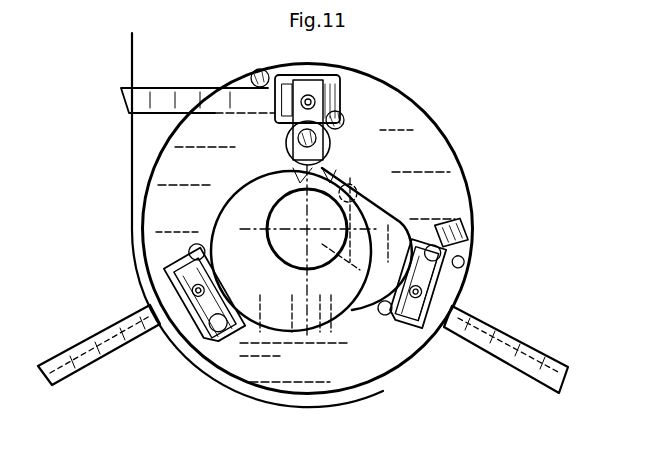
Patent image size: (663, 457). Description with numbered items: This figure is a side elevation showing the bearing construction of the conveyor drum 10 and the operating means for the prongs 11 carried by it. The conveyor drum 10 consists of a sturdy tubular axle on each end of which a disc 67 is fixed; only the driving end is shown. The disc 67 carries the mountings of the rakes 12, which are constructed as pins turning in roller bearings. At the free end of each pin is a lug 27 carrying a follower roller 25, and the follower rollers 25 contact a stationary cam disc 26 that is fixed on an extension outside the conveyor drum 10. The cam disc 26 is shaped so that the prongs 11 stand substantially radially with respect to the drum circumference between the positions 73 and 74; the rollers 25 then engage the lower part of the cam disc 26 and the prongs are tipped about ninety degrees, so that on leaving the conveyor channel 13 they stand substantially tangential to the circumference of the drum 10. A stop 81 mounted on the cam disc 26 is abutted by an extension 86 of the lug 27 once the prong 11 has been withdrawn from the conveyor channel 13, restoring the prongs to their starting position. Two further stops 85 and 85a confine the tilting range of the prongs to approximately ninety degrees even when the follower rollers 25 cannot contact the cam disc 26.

The conveyor drum 10 is at (452, 126).
The prong 11 is at (180, 90).
The rake 12 is at (282, 45).
The conveyor channel 13 is at (131, 200).
The follower roller 25 is at (290, 146).
The cam disc 26 is at (333, 332).
The lug 27 is at (320, 140).
The disc 67 is at (396, 352).
The position 73 is at (494, 350).
The position 74 is at (105, 352).
The stop 81 is at (358, 188).
The stop 85 is at (258, 69).
The stop 85a is at (344, 118).
The extension 86 is at (288, 170).